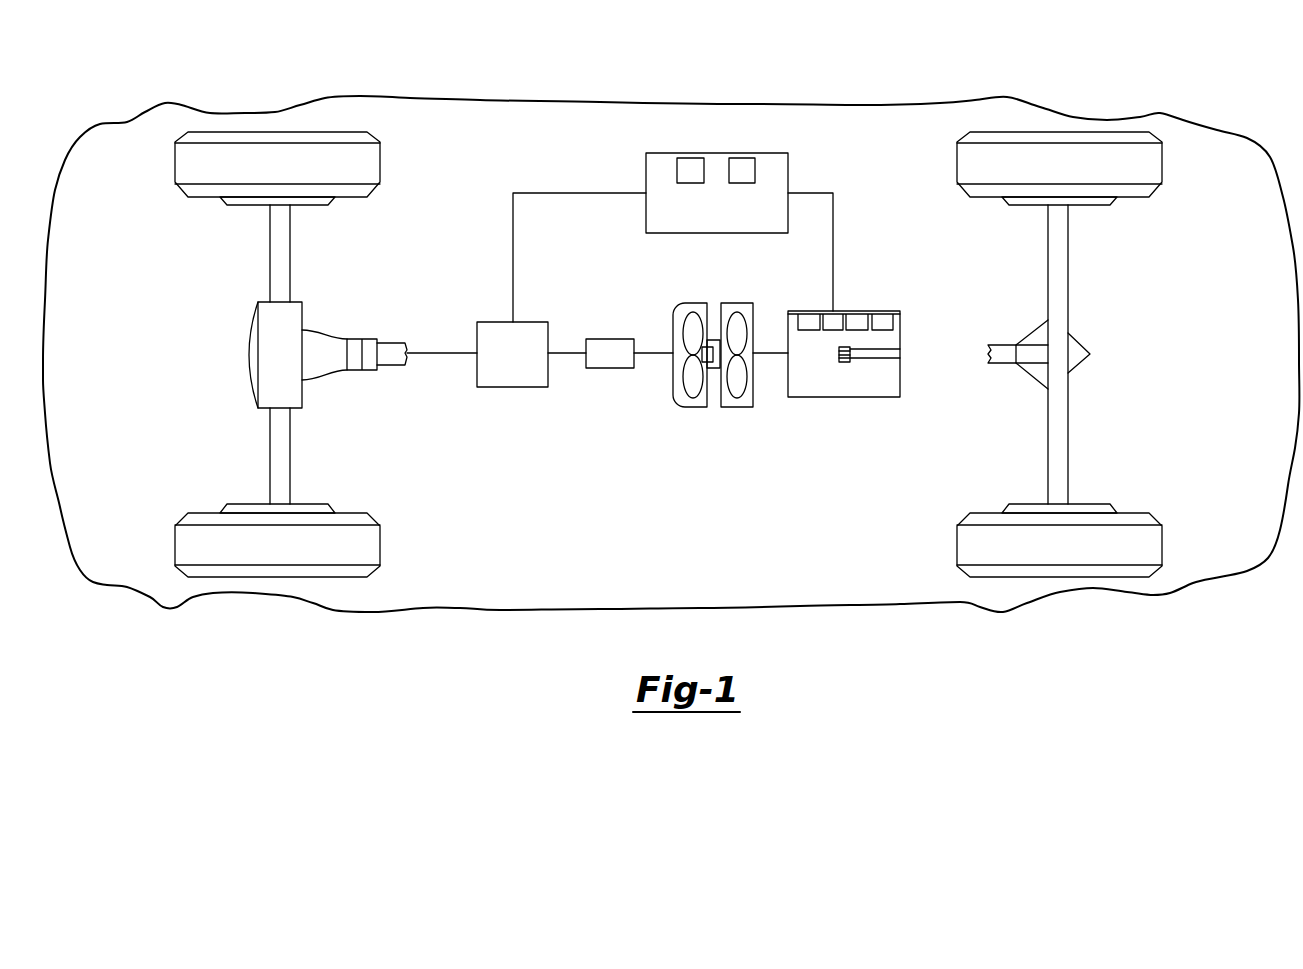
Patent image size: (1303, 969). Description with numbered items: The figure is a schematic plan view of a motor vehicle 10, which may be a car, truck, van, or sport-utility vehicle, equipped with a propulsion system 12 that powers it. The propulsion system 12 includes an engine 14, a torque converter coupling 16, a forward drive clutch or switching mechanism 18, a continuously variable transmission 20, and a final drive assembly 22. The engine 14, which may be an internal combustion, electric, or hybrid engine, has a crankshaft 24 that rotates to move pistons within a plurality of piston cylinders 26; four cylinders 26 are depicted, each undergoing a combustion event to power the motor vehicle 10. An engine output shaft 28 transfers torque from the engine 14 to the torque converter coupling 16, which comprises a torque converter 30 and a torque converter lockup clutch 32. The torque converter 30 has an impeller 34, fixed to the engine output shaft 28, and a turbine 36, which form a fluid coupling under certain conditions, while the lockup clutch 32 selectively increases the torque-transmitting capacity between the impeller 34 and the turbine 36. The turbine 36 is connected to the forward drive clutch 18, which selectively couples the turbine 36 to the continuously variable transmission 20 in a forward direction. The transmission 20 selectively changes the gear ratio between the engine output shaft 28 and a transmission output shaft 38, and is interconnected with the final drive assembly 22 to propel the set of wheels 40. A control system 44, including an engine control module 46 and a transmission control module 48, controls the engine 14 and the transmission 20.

The motor vehicle 10 is at (807, 68).
The propulsion system 12 is at (630, 473).
The engine 14 is at (848, 356).
The torque converter coupling 16 is at (694, 366).
The forward drive clutch or switching mechanism 18 is at (606, 326).
The continuously variable transmission 20 is at (512, 388).
The final drive assembly 22 is at (352, 310).
The crankshaft 24 is at (876, 360).
The piston cylinders 26 is at (858, 300).
The engine output shaft 28 is at (771, 360).
The torque converter 30 is at (667, 393).
The torque converter lockup clutch 32 is at (714, 381).
The impeller 34 is at (737, 407).
The turbine 36 is at (684, 379).
The transmission output shaft 38 is at (442, 358).
The wheels 40 is at (381, 163).
The control system 44 is at (673, 215).
The engine control module 46 is at (691, 157).
The transmission control module 48 is at (742, 157).